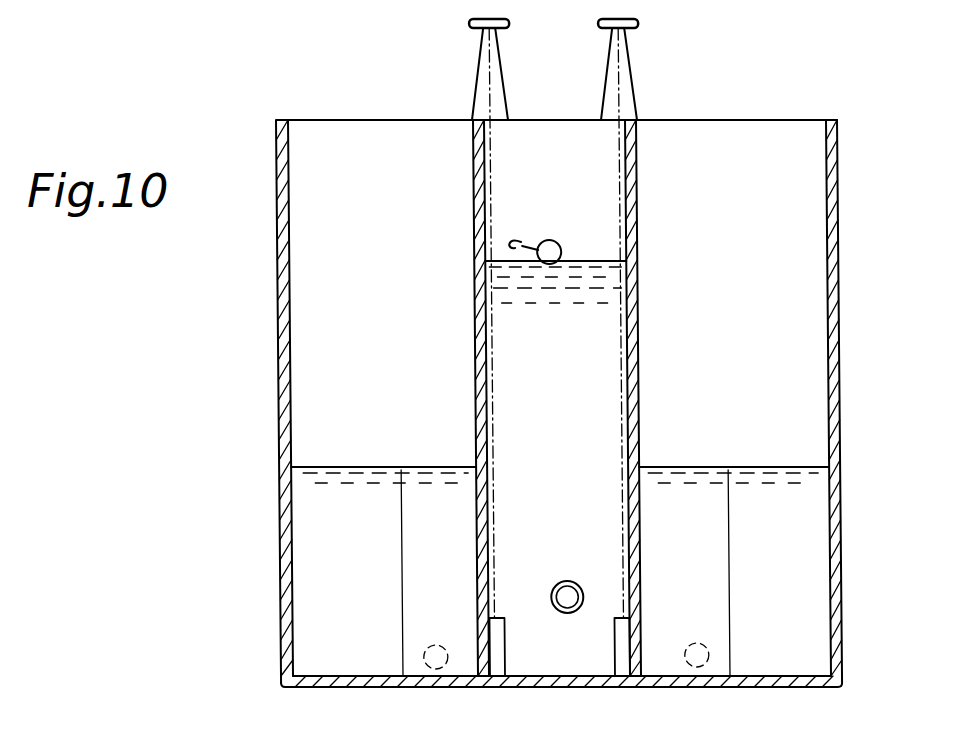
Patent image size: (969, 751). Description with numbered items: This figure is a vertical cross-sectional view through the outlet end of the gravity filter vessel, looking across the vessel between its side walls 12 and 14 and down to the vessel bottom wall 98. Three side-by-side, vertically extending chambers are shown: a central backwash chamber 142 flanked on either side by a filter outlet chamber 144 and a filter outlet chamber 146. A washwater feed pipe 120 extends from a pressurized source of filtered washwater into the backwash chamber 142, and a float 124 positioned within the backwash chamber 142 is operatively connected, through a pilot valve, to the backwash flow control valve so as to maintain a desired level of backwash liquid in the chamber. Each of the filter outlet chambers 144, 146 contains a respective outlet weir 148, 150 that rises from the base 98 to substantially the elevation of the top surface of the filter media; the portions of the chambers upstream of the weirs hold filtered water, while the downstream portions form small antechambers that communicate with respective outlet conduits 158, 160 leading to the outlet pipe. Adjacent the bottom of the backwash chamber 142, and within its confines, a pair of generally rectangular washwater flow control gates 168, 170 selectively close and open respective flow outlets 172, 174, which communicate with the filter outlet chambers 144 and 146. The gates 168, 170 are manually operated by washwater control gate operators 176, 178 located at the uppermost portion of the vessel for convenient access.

The side wall 12 is at (838, 244).
The side wall 14 is at (276, 226).
The vessel bottom wall 98 is at (795, 687).
The washwater feed pipe 120 is at (563, 580).
The float 124 is at (557, 240).
The backwash chamber 142 is at (545, 150).
The filter outlet chamber 144 is at (773, 134).
The filter outlet chamber 146 is at (325, 131).
The outlet weir 148 is at (413, 546).
The outlet weir 150 is at (710, 527).
The outlet conduit 158 is at (419, 650).
The outlet conduit 160 is at (705, 655).
The washwater flow control gate 168 is at (503, 656).
The washwater flow control gate 170 is at (620, 659).
The flow outlet 172 is at (482, 628).
The flow outlet 174 is at (637, 636).
The washwater control gate operator 176 is at (478, 79).
The washwater control gate operator 178 is at (628, 61).